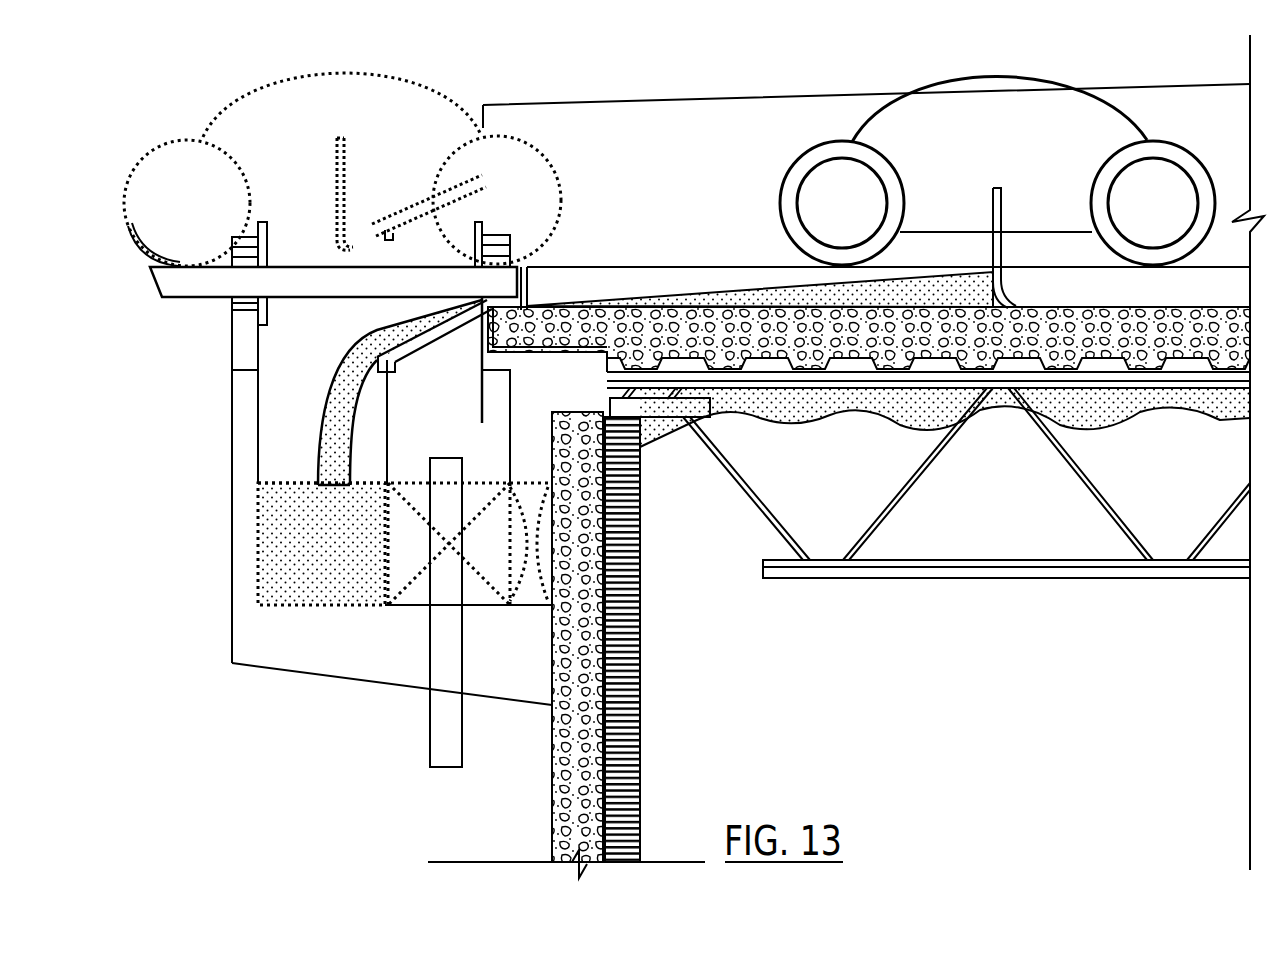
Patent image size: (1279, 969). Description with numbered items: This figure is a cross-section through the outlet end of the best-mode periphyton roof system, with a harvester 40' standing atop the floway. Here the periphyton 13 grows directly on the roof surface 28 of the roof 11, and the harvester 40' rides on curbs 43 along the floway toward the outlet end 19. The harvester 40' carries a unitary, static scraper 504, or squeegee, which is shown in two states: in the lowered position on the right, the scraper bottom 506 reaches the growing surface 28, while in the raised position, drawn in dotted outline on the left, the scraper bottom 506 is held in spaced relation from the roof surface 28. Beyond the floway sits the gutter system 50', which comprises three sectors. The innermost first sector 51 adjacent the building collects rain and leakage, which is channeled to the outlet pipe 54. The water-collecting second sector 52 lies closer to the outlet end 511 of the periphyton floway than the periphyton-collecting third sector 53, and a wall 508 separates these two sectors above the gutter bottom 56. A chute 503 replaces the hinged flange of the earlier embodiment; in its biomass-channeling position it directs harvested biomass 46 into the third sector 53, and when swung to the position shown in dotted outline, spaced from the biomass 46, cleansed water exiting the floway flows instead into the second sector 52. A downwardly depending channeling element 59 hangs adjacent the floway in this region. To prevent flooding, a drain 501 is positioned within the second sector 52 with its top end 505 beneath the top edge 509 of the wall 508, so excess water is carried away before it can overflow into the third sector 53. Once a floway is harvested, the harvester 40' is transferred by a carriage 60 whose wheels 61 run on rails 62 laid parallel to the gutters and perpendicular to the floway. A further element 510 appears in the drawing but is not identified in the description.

The harvester 40' is at (687, 142).
The scraper 504 is at (345, 140).
The scraper bottom 506 is at (350, 250).
The chute 503 is at (443, 367).
The wheels 61 is at (488, 262).
The carriage 60 is at (178, 282).
The rails 62 is at (231, 339).
The outlet pipe 54 is at (257, 461).
The gutter system 50' is at (191, 516).
The footing 510 is at (322, 660).
The third sector 53 is at (312, 525).
The gutter bottom 56 is at (300, 605).
The second sector 52 is at (418, 555).
The first sector 51 is at (520, 555).
The drain 501 is at (445, 712).
The top end 505 is at (445, 460).
The wall 508 is at (388, 427).
The harvested biomass 46 is at (352, 372).
The top edge 509 is at (377, 363).
The channeling element 59 is at (481, 392).
The outlet end 511 is at (522, 295).
The outlet end 19 is at (650, 308).
The curbs 43 is at (736, 265).
The roof surface 28 is at (923, 348).
The periphyton 13 is at (1175, 306).
The roof 11 is at (1128, 419).